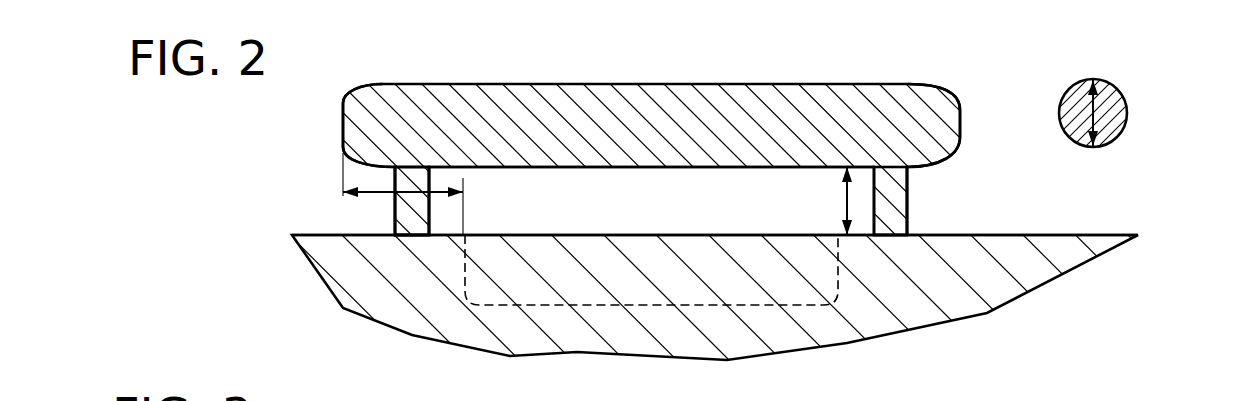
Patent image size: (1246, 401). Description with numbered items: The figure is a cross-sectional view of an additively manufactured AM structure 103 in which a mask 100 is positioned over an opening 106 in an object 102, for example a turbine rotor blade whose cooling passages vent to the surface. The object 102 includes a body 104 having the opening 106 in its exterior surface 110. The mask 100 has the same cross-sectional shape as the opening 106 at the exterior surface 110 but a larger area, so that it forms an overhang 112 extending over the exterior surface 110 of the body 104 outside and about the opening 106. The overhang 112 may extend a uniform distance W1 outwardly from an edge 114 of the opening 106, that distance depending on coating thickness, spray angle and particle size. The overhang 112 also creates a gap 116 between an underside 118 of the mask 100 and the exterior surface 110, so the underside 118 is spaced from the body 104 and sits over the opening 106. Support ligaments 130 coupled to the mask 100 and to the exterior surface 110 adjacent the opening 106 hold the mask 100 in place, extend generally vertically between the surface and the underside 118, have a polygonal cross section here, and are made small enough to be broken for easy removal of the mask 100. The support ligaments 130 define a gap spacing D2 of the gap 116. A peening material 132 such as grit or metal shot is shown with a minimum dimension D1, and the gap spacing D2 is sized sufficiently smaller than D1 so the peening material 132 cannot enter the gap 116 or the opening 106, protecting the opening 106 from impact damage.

The mask 100 is at (620, 103).
The object 102 is at (768, 300).
The AM structure 103 is at (672, 133).
The body 104 is at (1069, 257).
The opening 106 is at (788, 288).
The exterior surface 110 is at (1052, 234).
The overhang 112 is at (462, 83).
The edge 114 is at (465, 234).
The gap 116 is at (955, 167).
The underside 118 is at (702, 167).
The support ligament 130 is at (420, 181).
The peening material 132 is at (1108, 105).
The minimum dimension D1 is at (1073, 122).
The gap spacing D2 is at (845, 202).
The uniform distance W1 is at (383, 193).